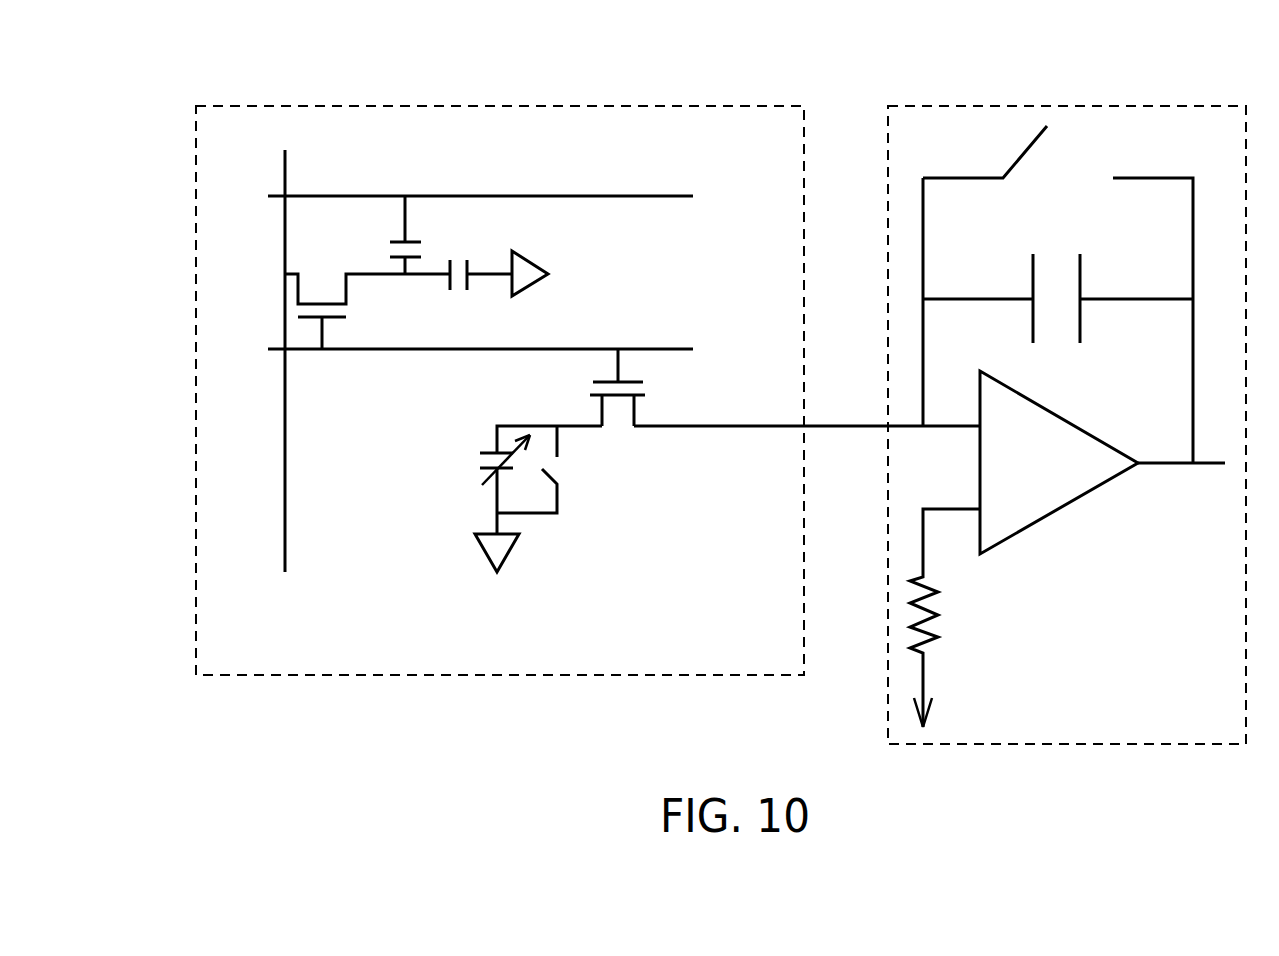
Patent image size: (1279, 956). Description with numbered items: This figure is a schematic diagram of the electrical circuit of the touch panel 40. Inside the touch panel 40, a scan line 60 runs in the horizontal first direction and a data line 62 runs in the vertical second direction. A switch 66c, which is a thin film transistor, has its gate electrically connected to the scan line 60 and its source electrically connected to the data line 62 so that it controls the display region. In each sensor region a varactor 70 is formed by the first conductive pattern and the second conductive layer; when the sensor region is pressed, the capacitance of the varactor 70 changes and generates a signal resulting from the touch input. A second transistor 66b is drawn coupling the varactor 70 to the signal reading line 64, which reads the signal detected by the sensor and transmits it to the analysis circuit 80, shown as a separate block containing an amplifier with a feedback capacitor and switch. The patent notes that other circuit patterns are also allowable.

The touch panel 40 is at (243, 106).
The analysis circuit 80 is at (1205, 106).
The scan line 60 is at (275, 348).
The data line 62 is at (287, 547).
The switch 66c is at (321, 275).
The transistor 66b is at (648, 386).
The varactor 70 is at (472, 462).
The signal reading line 64 is at (856, 426).